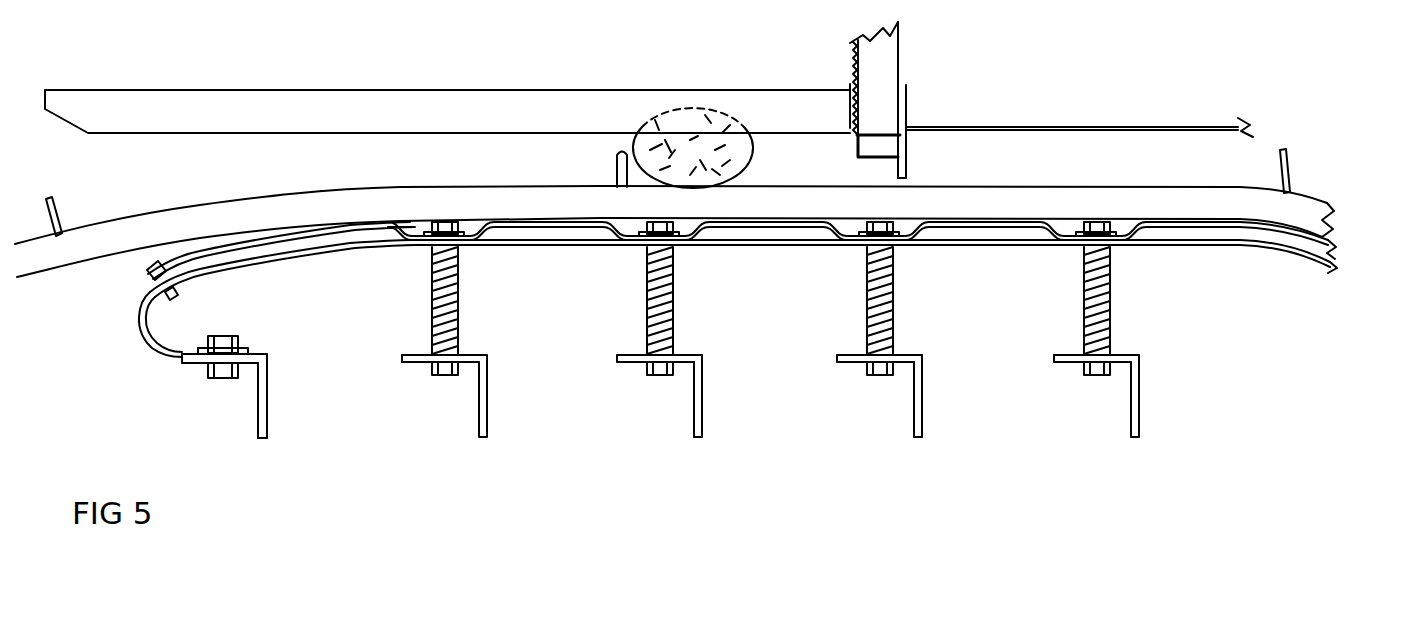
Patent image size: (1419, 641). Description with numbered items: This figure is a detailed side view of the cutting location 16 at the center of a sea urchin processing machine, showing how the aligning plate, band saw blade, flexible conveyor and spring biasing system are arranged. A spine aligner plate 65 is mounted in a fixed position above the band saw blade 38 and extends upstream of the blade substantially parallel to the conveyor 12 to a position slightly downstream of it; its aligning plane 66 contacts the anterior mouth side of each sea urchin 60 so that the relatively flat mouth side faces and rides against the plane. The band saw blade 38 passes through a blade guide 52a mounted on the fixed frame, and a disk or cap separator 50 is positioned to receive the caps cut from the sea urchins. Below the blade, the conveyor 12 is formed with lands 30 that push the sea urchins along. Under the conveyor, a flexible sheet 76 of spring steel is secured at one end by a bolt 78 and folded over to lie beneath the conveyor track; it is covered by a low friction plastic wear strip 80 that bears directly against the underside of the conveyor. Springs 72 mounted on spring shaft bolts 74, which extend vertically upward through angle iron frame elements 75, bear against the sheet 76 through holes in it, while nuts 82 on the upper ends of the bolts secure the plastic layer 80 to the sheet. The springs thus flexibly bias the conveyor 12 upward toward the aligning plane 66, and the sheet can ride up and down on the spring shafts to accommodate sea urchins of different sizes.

The conveyor 12 is at (191, 205).
The cutting location 16 is at (844, 118).
The lands 30 is at (60, 175).
The band saw blade 38 is at (898, 76).
The disk or cap separator 50 is at (1118, 124).
The blade guide 52a is at (893, 153).
The sea urchin 60 is at (750, 152).
The spine aligner plate 65 is at (406, 56).
The aligning plane 66 is at (284, 134).
The spring 72 is at (450, 329).
The spring shaft bolt 74 is at (449, 373).
The angle iron frame element 75 is at (488, 400).
The flexible sheet 76 is at (320, 248).
The bolt 78 is at (225, 379).
The wear strip 80 is at (140, 288).
The nut 82 is at (440, 232).